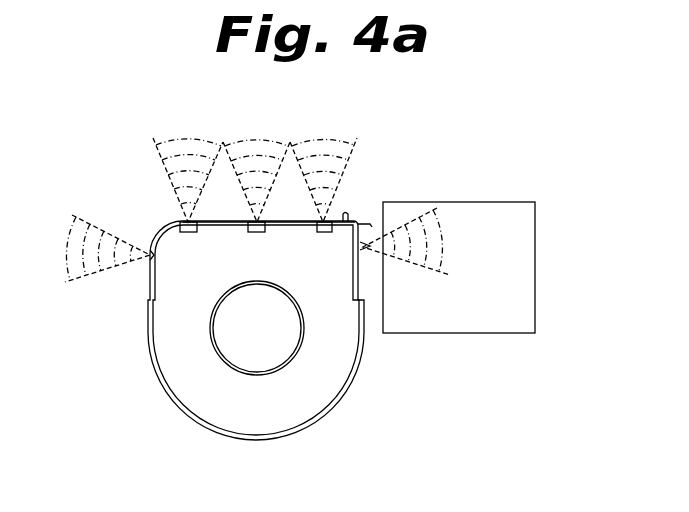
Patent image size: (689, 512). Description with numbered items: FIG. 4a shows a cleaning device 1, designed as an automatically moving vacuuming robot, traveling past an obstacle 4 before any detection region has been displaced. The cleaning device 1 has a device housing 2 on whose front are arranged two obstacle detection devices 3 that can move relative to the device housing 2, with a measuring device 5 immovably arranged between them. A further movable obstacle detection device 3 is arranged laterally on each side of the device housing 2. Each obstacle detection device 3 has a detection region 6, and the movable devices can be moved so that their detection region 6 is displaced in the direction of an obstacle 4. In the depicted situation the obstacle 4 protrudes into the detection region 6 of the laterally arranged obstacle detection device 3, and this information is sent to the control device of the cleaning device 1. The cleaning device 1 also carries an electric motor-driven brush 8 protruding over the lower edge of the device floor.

The cleaning device 1 is at (370, 367).
The device housing 2 is at (177, 377).
The obstacle detection device 3 is at (187, 223).
The obstacle 4 is at (502, 220).
The measuring device 5 is at (263, 220).
The detection region 6 is at (98, 238).
The brush 8 is at (348, 214).